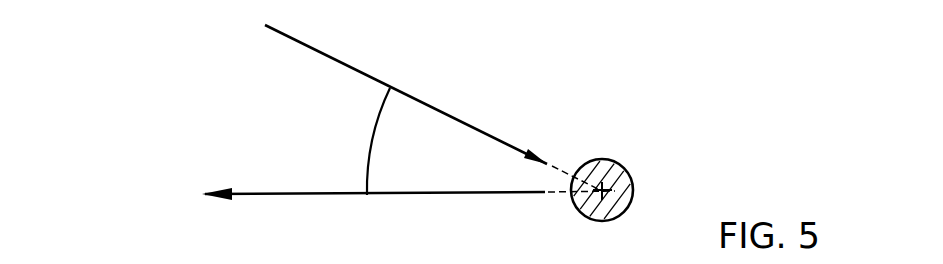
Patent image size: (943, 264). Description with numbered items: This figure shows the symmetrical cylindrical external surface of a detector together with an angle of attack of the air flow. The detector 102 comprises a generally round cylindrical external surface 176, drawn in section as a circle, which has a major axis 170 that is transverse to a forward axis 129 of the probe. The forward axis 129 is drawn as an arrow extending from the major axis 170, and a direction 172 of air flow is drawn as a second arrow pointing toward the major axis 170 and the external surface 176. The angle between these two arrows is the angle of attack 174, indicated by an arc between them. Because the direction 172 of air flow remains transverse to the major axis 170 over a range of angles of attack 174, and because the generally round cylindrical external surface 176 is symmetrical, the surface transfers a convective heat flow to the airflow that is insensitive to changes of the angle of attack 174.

The detector 102 is at (556, 222).
The forward axis 129 is at (240, 197).
The major axis 170 is at (600, 196).
The direction of air flow 172 is at (452, 113).
The angle of attack 174 is at (367, 153).
The generally round cylindrical external surface 176 is at (603, 160).